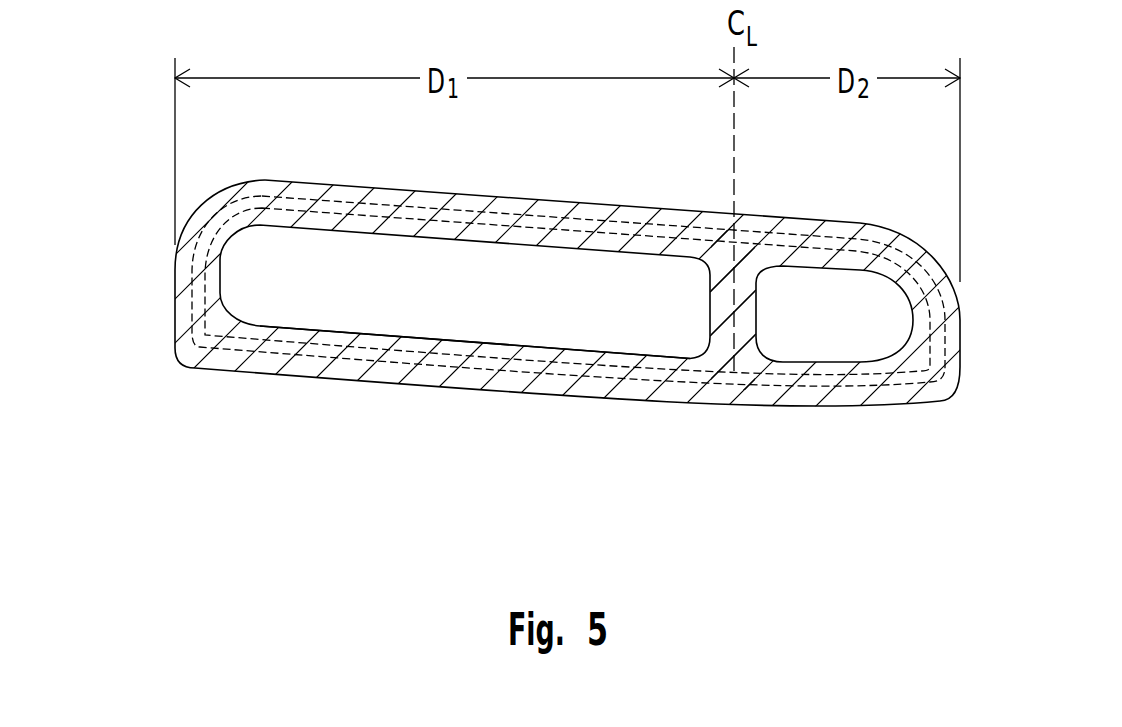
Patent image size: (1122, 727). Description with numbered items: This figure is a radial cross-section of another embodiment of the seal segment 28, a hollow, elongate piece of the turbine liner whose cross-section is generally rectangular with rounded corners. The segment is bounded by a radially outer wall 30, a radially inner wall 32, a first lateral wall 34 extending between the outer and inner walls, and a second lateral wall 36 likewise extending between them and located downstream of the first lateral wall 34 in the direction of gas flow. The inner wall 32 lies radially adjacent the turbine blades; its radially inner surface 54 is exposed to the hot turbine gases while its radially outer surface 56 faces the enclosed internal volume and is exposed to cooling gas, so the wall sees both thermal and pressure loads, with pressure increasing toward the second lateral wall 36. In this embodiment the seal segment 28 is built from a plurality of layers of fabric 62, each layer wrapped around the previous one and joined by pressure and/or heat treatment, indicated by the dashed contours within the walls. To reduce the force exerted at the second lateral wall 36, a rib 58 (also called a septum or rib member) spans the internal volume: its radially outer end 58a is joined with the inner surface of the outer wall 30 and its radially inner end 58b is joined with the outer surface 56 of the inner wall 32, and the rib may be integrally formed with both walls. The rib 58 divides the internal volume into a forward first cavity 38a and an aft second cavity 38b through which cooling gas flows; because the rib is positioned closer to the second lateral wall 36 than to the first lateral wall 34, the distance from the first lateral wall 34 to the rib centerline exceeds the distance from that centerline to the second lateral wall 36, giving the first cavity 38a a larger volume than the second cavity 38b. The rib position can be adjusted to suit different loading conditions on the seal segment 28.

The seal segment 28 is at (590, 179).
The radially outer wall 30 is at (355, 179).
The radially inner wall 32 is at (225, 362).
The first lateral wall 34 is at (178, 313).
The second lateral wall 36 is at (952, 336).
The first cavity 38a is at (500, 318).
The second cavity 38b is at (847, 297).
The radially inner surface 54 is at (557, 396).
The radially outer surface 56 is at (387, 333).
The rib 58 is at (752, 309).
The radially outer end 58a is at (743, 277).
The radially inner end 58b is at (727, 347).
The layers of fabric 62 is at (512, 215).